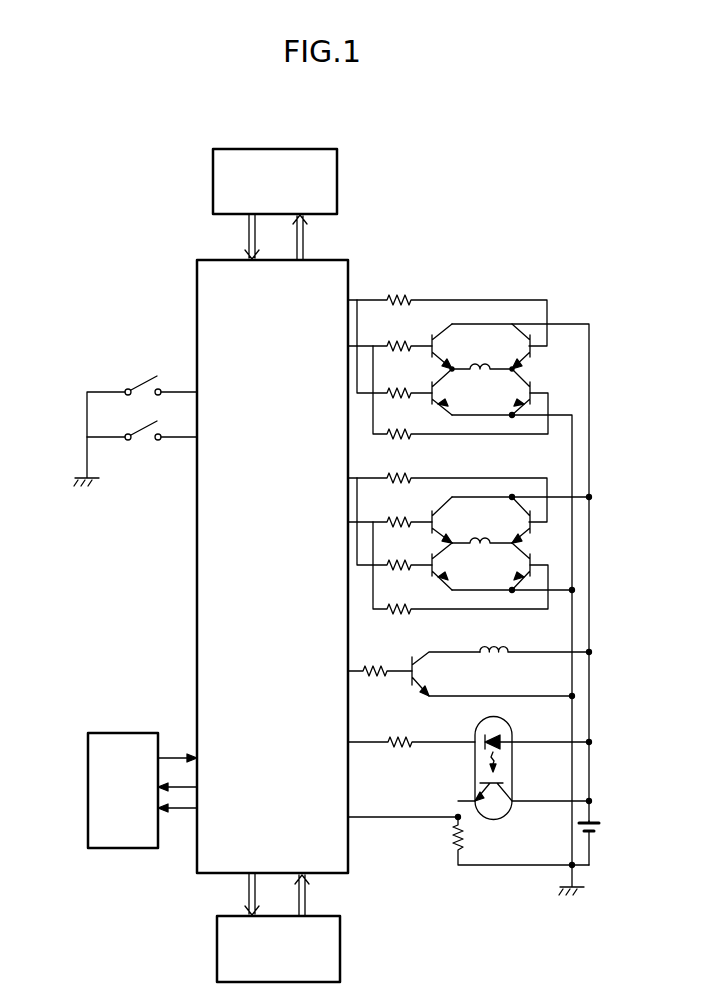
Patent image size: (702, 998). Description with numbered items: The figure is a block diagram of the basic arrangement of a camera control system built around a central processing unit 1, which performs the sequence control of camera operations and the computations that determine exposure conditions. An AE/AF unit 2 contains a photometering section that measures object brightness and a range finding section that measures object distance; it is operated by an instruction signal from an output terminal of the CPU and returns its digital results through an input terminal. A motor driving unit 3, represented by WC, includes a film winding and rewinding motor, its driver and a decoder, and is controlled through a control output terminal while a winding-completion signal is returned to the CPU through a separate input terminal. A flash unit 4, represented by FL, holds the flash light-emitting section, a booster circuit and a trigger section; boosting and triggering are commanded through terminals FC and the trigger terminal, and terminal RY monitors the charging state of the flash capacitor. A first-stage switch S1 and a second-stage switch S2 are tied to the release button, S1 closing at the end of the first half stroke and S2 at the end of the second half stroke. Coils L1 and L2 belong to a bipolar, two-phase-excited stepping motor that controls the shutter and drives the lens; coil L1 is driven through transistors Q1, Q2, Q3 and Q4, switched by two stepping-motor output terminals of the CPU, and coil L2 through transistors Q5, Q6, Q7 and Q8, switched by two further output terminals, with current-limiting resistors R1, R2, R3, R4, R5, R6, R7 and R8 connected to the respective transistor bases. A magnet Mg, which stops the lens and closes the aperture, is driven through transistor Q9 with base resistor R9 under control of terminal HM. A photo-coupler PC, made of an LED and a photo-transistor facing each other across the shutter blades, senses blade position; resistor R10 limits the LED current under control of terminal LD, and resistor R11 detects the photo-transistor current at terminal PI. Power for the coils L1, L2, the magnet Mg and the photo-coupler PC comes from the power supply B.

The central processing unit 1 is at (197, 566).
The AE/AF unit 2 is at (337, 178).
The motor driving unit 3 is at (340, 932).
The flash unit 4 is at (115, 733).
The first-stage switch S1 is at (135, 426).
The second-stage switch S2 is at (142, 425).
The current-limiting resistor R1 is at (447, 312).
The current-limiting resistor R2 is at (390, 338).
The current-limiting resistor R3 is at (394, 349).
The current-limiting resistor R4 is at (460, 392).
The current-limiting resistor R5 is at (447, 489).
The current-limiting resistor R6 is at (390, 514).
The current-limiting resistor R7 is at (394, 524).
The current-limiting resistor R8 is at (460, 568).
The current-limiting resistor R9 is at (380, 662).
The current limiting resistor R10 is at (470, 733).
The current detection resistor R11 is at (468, 841).
The transistor Q1 is at (449, 346).
The transistor Q2 is at (508, 346).
The transistor Q3 is at (449, 392).
The transistor Q4 is at (508, 392).
The transistor Q5 is at (449, 520).
The transistor Q6 is at (508, 520).
The transistor Q7 is at (449, 566).
The transistor Q8 is at (508, 566).
The transistor Q9 is at (493, 675).
The stepping motor coil L1 is at (481, 360).
The stepping motor coil L2 is at (481, 534).
The magnet Mg is at (535, 642).
The photo-coupler PC is at (525, 768).
The power supply B is at (596, 842).